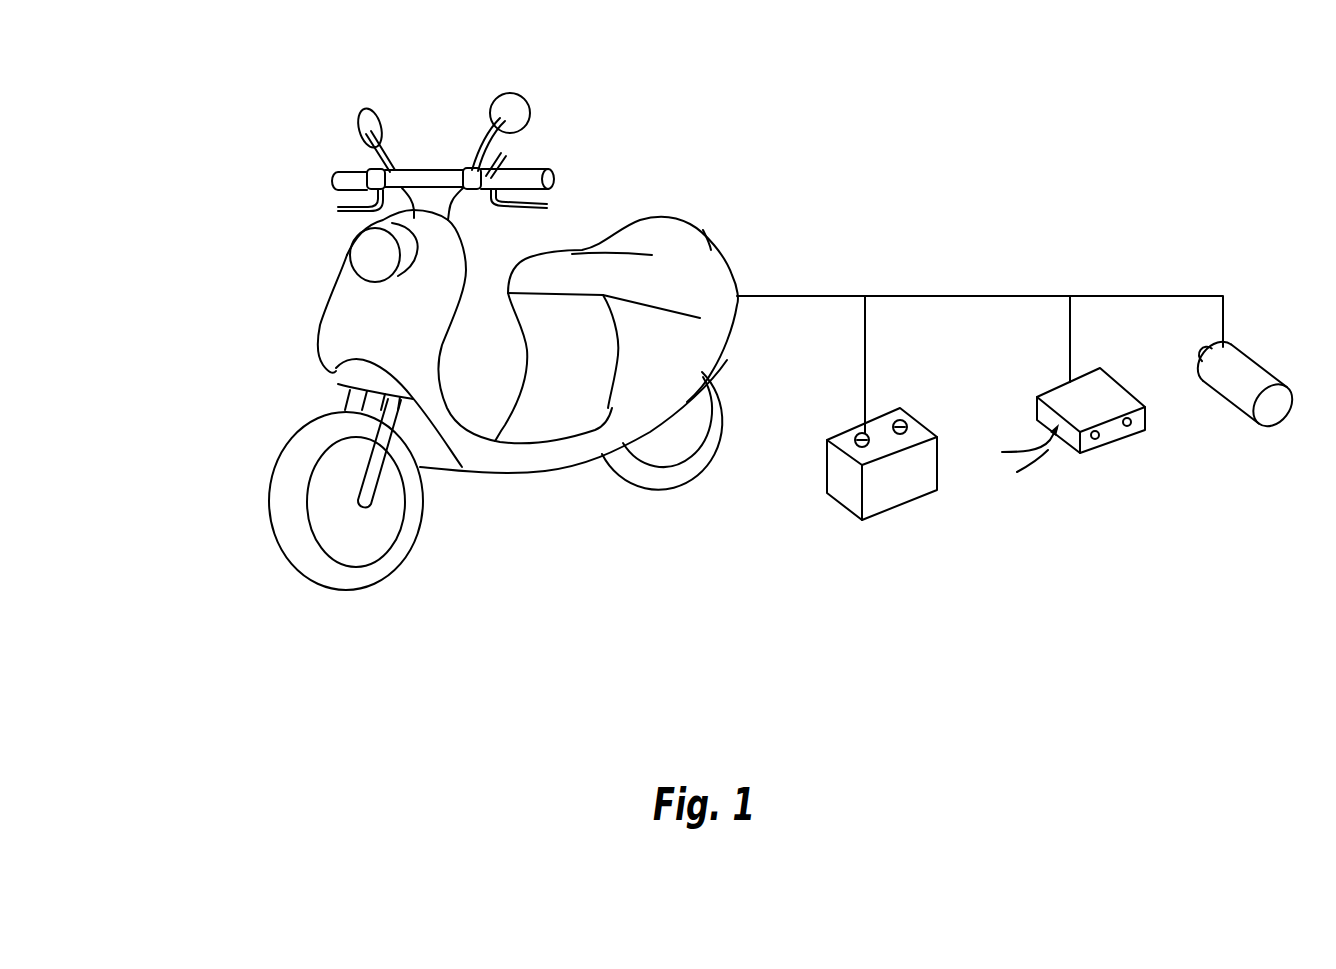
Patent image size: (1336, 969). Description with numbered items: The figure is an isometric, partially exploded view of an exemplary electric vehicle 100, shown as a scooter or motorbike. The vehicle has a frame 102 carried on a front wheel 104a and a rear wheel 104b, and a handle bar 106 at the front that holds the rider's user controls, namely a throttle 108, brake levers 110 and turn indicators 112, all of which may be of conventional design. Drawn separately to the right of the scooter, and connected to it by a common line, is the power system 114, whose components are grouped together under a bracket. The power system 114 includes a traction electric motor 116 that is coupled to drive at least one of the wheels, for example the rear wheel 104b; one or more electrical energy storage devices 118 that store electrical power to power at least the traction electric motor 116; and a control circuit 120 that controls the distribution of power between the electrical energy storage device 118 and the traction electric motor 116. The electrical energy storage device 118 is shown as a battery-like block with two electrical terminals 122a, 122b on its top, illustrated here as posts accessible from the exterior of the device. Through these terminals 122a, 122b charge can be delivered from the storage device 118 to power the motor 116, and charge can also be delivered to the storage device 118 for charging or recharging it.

The electric vehicle 100 is at (221, 127).
The frame 102 is at (523, 476).
The wheel 104a is at (283, 478).
The rear wheel 104b is at (665, 482).
The handle bar 106 is at (437, 180).
The throttle 108 is at (345, 172).
The brake levers 110 is at (344, 210).
The turn indicators 112 is at (507, 157).
The power system 114 is at (1228, 285).
The traction electric motor 116 is at (1253, 367).
The electrical energy storage device 118 is at (900, 497).
The control circuit 120 is at (1115, 437).
The electrical terminal 122a is at (856, 430).
The electrical terminal 122b is at (905, 418).